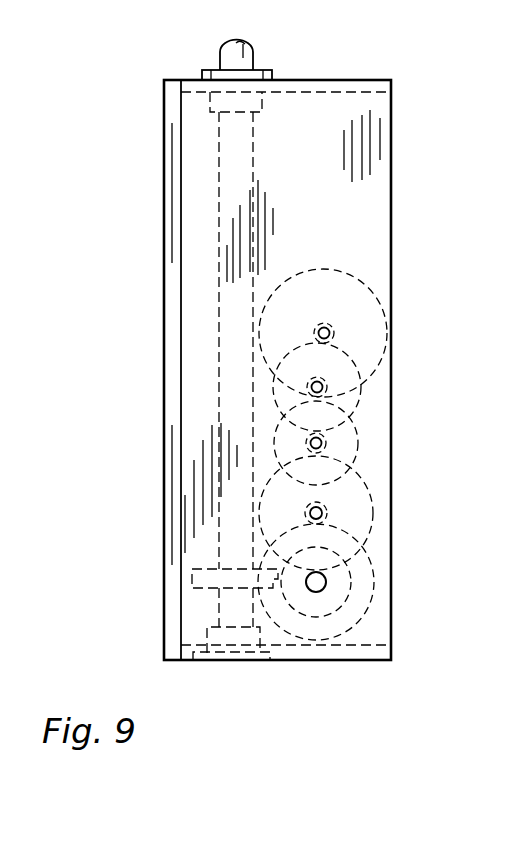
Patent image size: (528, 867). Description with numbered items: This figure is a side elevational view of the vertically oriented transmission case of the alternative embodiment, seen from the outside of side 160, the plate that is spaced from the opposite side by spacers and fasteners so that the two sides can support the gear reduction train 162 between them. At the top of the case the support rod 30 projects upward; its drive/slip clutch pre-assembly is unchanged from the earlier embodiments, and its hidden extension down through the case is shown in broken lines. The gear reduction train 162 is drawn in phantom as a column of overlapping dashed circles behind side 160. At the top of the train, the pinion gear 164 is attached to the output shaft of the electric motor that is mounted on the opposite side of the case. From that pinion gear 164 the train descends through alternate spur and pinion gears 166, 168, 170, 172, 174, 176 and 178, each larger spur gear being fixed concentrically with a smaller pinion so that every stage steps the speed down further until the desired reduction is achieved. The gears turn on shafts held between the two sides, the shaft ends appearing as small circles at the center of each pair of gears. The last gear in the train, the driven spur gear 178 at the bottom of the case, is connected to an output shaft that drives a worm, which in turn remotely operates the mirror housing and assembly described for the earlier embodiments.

The support rod 30 is at (247, 57).
The side 160 is at (320, 168).
The gear reduction train 162 is at (328, 269).
The pinion gear 164 is at (337, 326).
The spur gear 166 is at (347, 393).
The pinion gear 168 is at (328, 377).
The spur gear 170 is at (345, 448).
The pinion gear 172 is at (328, 435).
The spur gear 174 is at (350, 520).
The pinion gear 176 is at (327, 502).
The driven spur gear 178 is at (360, 582).